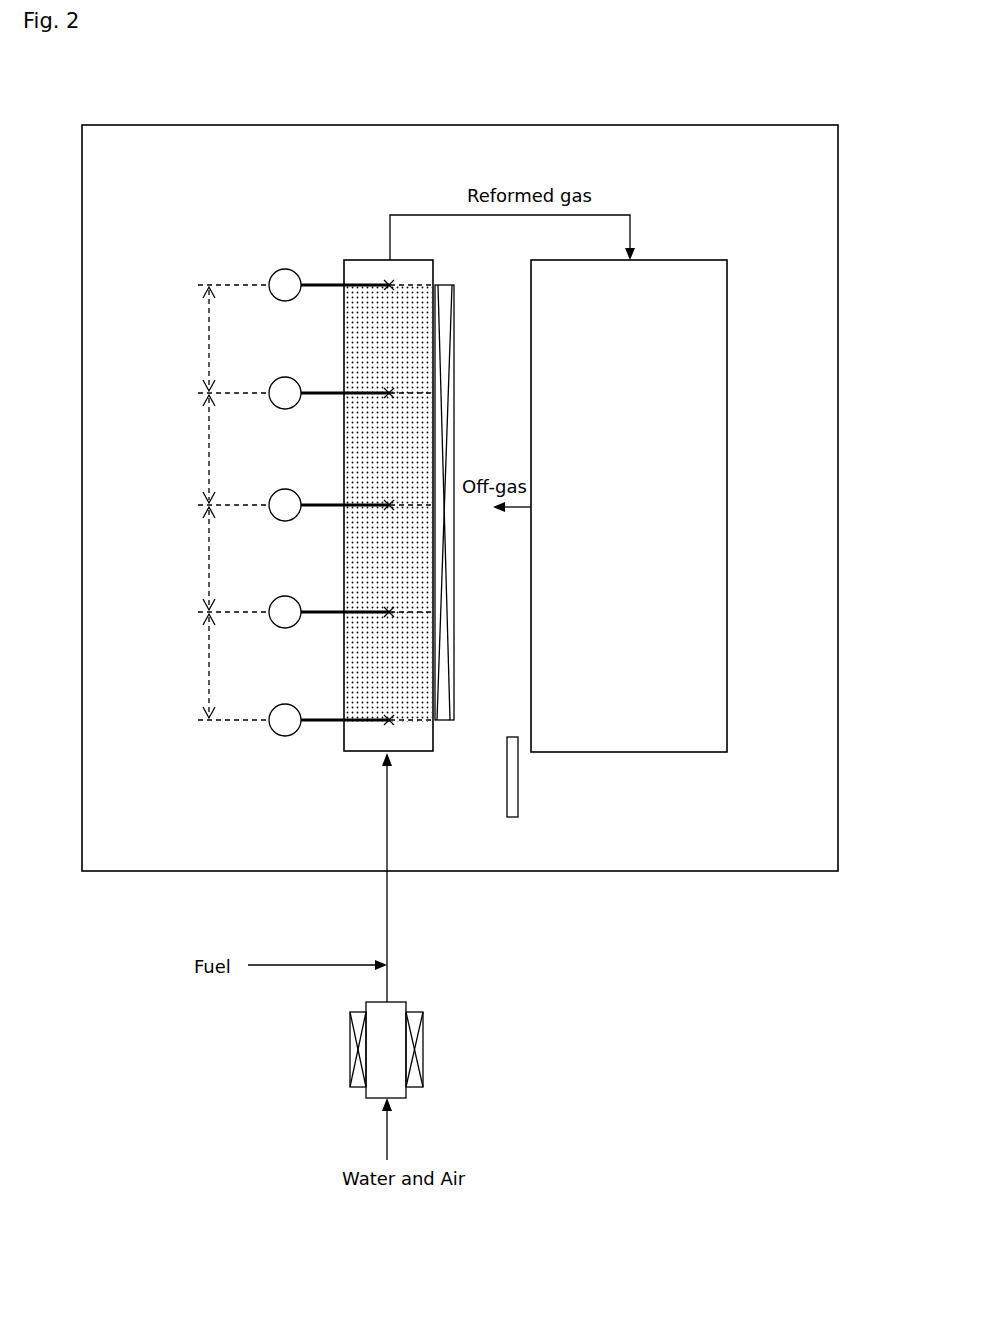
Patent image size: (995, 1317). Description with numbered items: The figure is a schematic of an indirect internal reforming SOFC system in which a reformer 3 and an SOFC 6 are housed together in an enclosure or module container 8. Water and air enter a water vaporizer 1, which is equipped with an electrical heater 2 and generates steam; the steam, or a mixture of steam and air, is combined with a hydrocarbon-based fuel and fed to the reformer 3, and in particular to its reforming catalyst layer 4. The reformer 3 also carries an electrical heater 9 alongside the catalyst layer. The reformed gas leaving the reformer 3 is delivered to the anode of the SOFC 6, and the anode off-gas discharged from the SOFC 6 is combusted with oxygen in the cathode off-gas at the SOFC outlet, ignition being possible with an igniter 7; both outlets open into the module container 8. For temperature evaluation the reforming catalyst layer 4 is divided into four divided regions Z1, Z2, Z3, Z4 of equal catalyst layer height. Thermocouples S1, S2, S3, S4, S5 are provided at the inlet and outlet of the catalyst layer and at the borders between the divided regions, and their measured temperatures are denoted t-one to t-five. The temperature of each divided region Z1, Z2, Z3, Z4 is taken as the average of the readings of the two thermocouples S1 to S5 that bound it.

The water vaporizer 1 is at (366, 1098).
The electrical heater 2 is at (352, 1040).
The reformer 3 is at (344, 260).
The reforming catalyst layer 4 is at (410, 312).
The SOFC 6 is at (703, 260).
The igniter 7 is at (519, 810).
The enclosure (module container) 8 is at (647, 871).
The electrical heater 9 is at (446, 422).
The thermocouple S1 is at (292, 737).
The thermocouple S2 is at (292, 629).
The thermocouple S3 is at (292, 522).
The thermocouple S4 is at (292, 410).
The thermocouple S5 is at (292, 302).
The divided region Z1 is at (196, 666).
The divided region Z2 is at (196, 558).
The divided region Z3 is at (196, 449).
The divided region Z4 is at (196, 339).